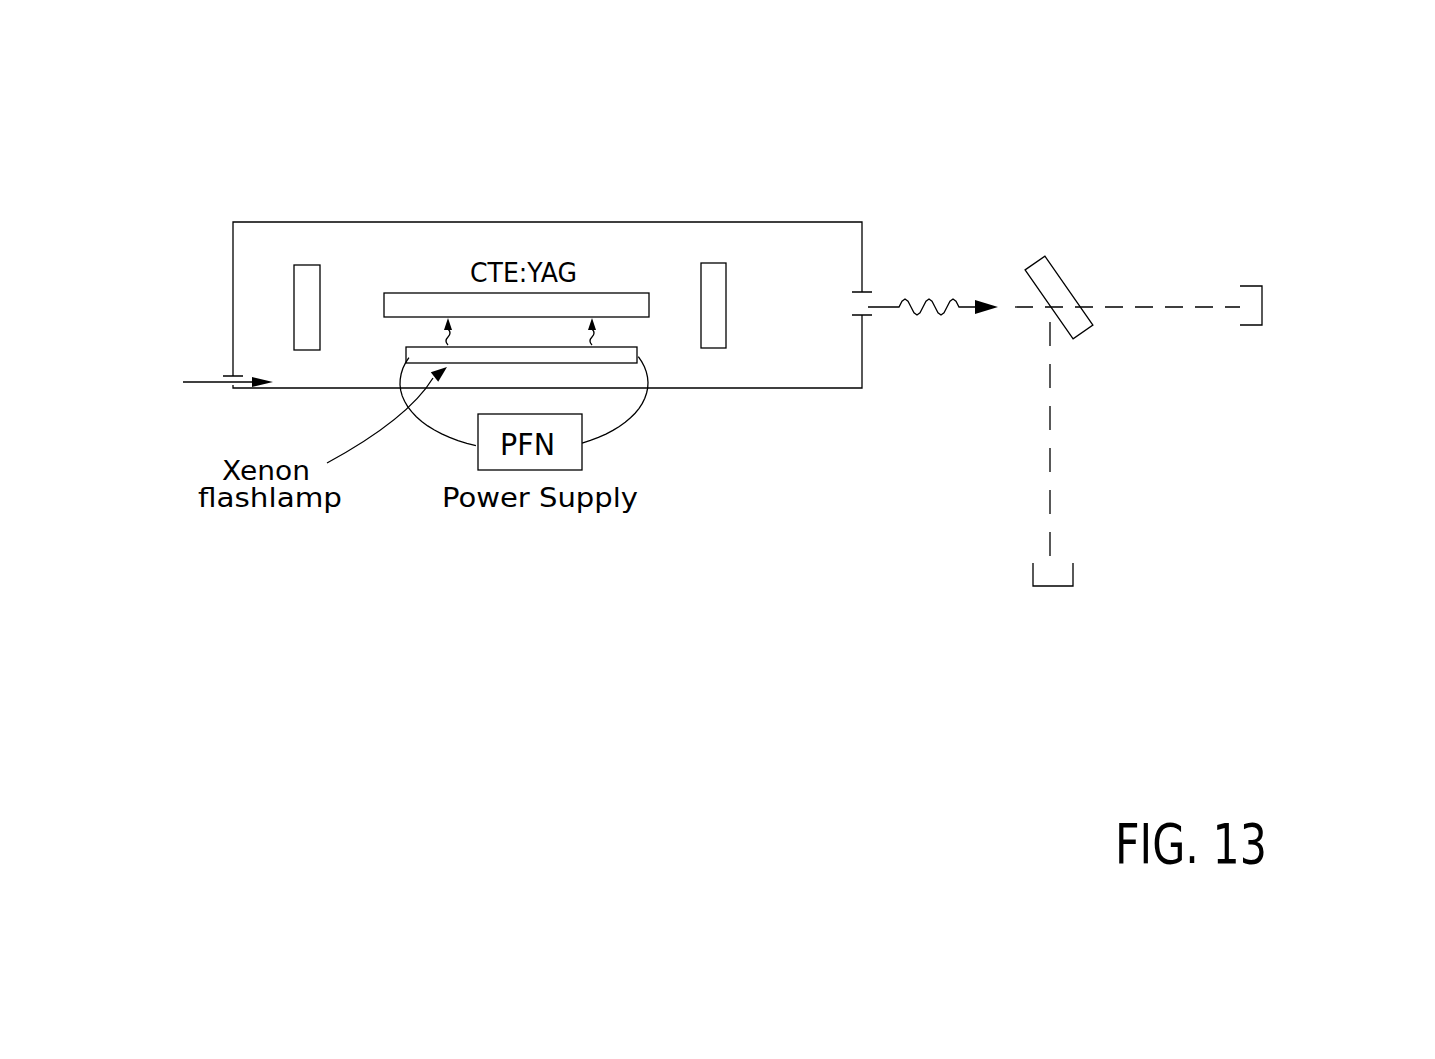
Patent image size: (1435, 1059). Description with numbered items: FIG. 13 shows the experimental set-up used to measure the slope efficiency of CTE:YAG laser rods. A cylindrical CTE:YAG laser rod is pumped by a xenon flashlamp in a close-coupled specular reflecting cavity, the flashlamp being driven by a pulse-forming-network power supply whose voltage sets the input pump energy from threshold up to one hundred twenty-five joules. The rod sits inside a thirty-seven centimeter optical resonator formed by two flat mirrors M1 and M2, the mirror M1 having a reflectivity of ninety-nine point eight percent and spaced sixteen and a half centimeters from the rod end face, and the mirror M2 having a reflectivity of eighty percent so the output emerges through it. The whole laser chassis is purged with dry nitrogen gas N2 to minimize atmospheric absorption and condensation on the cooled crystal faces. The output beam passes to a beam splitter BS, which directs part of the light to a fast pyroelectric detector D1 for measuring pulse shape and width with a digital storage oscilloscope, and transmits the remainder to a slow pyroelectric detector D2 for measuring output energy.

The flat mirror M1 is at (314, 254).
The flat mirror M2 is at (731, 247).
The dry nitrogen gas N2 is at (205, 381).
The beam splitter BS is at (1057, 274).
The fast pyroelectric detector D1 is at (1075, 636).
The slow pyroelectric detector D2 is at (1310, 353).